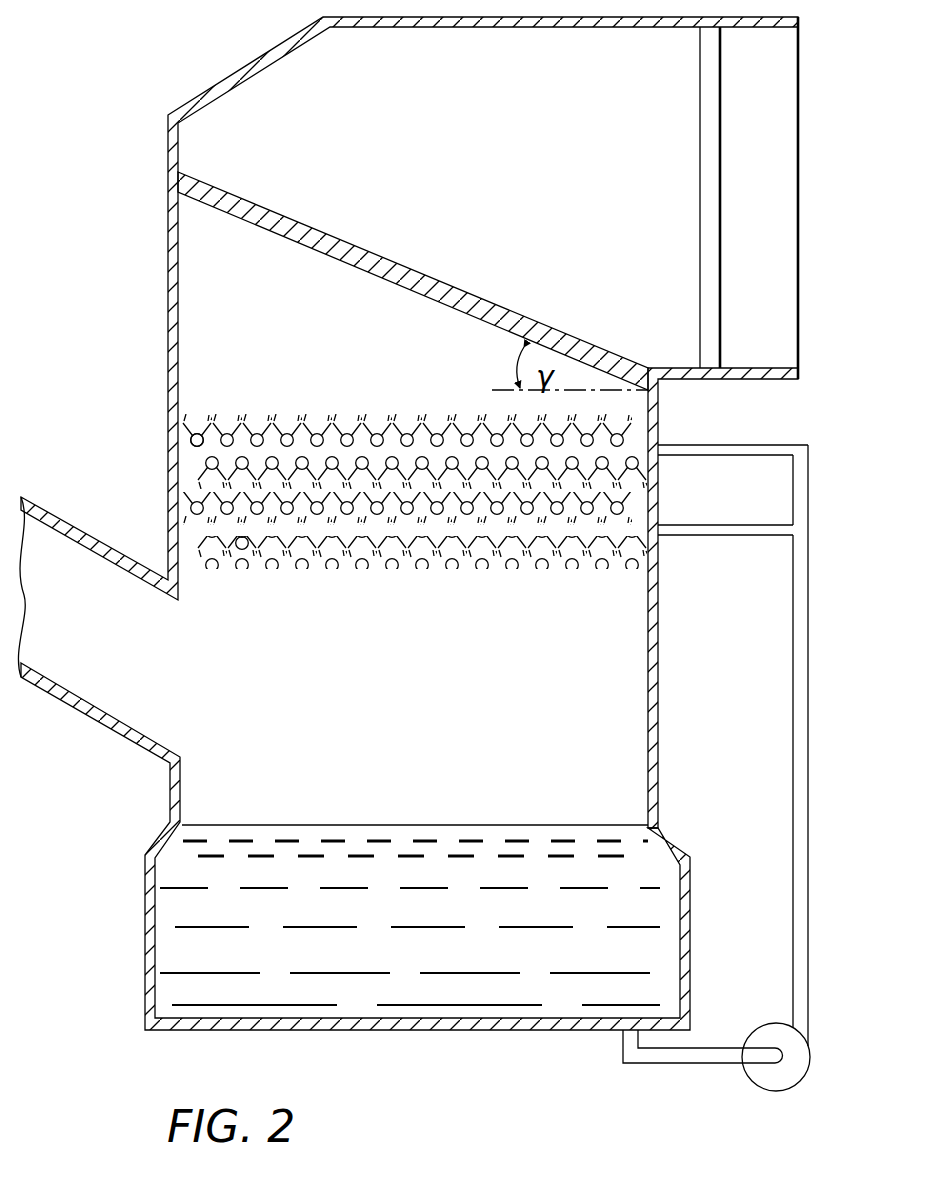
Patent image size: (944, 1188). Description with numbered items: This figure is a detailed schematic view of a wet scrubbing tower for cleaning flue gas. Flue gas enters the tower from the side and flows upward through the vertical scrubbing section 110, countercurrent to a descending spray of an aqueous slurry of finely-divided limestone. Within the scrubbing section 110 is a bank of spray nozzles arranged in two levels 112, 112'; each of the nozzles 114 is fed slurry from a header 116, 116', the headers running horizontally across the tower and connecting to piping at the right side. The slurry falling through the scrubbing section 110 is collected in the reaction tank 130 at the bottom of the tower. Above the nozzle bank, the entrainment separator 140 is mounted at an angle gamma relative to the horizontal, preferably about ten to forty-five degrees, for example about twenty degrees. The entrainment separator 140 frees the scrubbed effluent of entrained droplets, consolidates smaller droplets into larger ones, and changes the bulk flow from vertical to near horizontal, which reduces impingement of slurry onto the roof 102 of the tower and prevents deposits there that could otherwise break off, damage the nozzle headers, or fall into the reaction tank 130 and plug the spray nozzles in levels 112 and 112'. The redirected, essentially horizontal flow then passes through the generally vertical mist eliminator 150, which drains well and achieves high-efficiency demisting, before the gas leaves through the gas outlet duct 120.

The roof 102 is at (292, 52).
The vertical scrubbing section 110 is at (815, 445).
The level of spray nozzles 112 is at (253, 571).
The level of spray nozzles 112' is at (239, 404).
The spray nozzle 114 is at (437, 426).
The header 116 is at (725, 570).
The header 116' is at (733, 425).
The gas outlet duct 120 is at (779, 252).
The reaction tank 130 is at (418, 965).
The entrainment separator 140 is at (383, 258).
The mist eliminator 150 is at (704, 158).